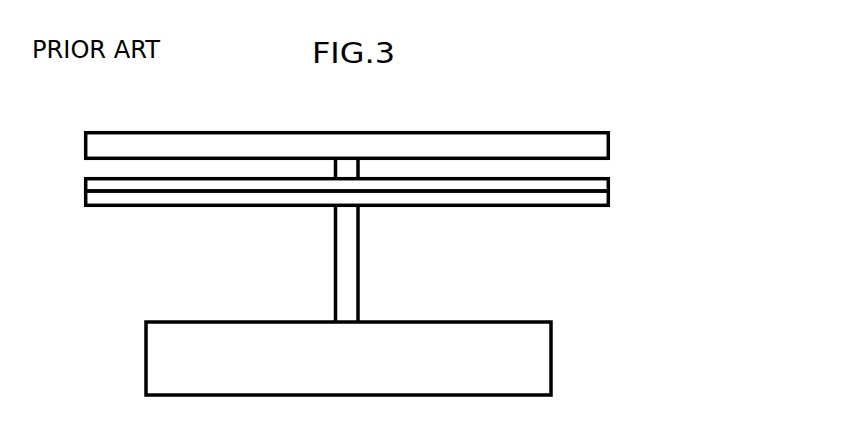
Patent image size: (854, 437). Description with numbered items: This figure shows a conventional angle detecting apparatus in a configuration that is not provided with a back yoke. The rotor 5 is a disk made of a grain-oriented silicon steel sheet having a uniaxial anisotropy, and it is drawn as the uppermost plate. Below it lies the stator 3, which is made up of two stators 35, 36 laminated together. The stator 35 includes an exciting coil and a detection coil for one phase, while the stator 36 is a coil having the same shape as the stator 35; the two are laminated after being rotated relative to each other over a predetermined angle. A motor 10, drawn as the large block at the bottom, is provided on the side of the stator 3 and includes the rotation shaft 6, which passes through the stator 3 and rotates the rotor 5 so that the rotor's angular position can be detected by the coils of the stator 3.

The stator 3 is at (440, 184).
The rotor 5 is at (610, 140).
The rotation shaft 6 is at (348, 243).
The motor 10 is at (528, 346).
The stator 35 is at (608, 185).
The stator 36 is at (416, 214).